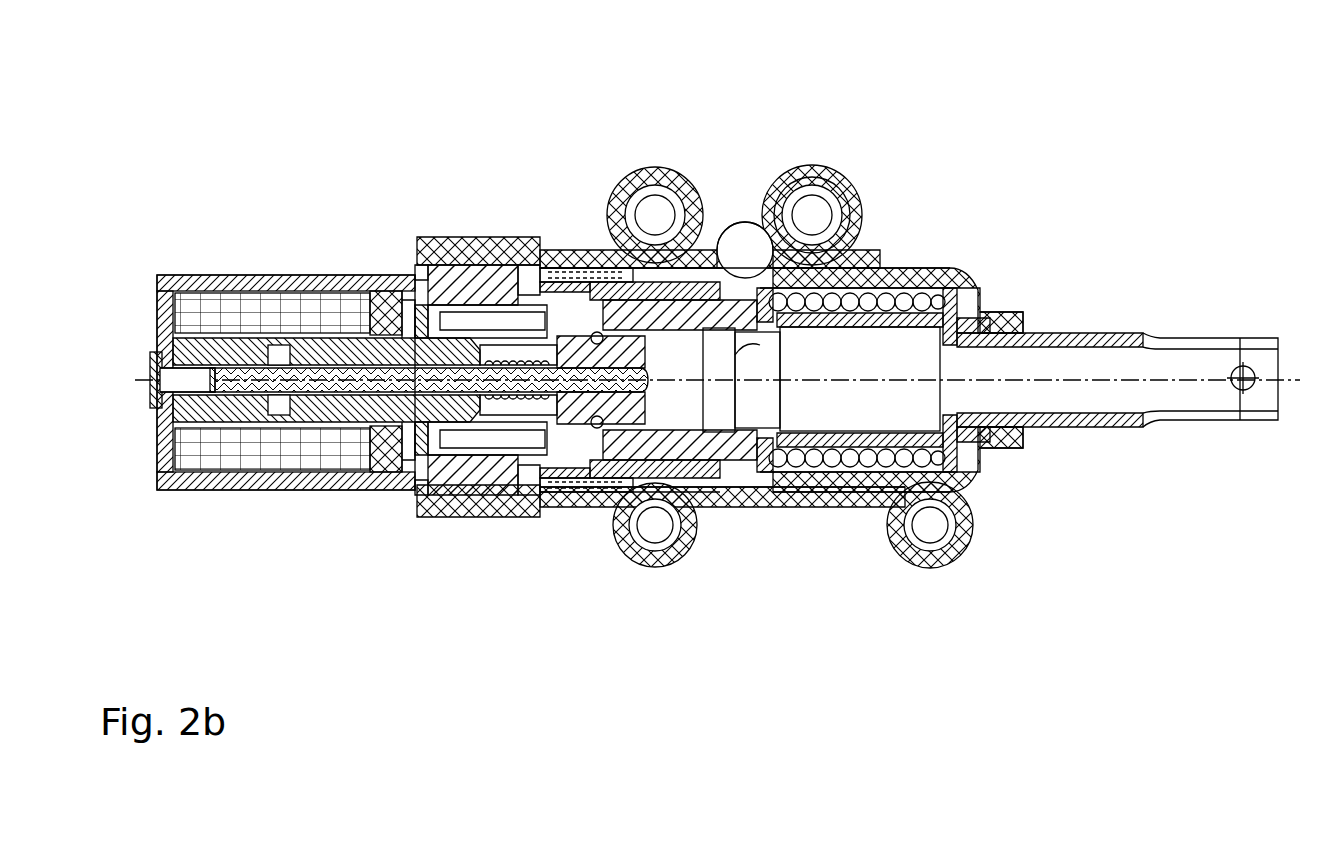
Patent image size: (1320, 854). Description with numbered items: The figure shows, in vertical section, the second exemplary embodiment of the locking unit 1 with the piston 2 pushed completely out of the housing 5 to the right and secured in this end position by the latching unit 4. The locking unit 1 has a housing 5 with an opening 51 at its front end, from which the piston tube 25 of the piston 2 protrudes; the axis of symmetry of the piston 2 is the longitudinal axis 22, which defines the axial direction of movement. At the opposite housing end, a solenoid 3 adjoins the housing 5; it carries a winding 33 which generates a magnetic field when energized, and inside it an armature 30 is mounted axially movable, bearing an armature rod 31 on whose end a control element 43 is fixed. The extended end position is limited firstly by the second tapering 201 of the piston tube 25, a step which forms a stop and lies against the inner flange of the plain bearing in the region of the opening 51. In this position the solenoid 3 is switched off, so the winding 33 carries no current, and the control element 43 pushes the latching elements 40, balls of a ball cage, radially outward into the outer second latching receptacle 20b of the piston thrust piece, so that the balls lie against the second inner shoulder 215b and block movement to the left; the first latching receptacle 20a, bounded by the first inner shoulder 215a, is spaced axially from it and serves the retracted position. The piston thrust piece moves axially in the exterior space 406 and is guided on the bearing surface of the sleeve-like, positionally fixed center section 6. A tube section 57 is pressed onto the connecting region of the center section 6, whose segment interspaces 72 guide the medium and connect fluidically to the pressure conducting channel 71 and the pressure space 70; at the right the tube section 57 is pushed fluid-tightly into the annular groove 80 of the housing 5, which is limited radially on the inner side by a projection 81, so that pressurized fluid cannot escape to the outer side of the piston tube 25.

The locking unit 1 is at (313, 200).
The piston 2 is at (693, 318).
The solenoid 3 is at (399, 413).
The latching unit 4 is at (540, 500).
The housing 5 is at (863, 420).
The center section 6 is at (492, 517).
The longitudinal axis 22 is at (852, 382).
The piston tube 25 is at (1125, 336).
The armature 30 is at (393, 277).
The armature rod 31 is at (448, 278).
The winding 33 is at (232, 284).
The latching elements 40 is at (594, 300).
The control element 43 is at (570, 500).
The opening 51 is at (1035, 428).
The tube section 57 is at (748, 507).
The pressure space 70 is at (756, 306).
The pressure conducting channel 71 is at (840, 170).
The segment interspaces 72 is at (540, 262).
The groove 80 is at (870, 242).
The projection 81 is at (800, 495).
The second tapering 201 is at (982, 292).
The first inner shoulder 215a is at (747, 262).
The second inner shoulder 215b is at (645, 228).
The exterior space 406 is at (452, 517).
The first latching receptacle 20a is at (905, 268).
The second latching receptacle 20b is at (563, 276).